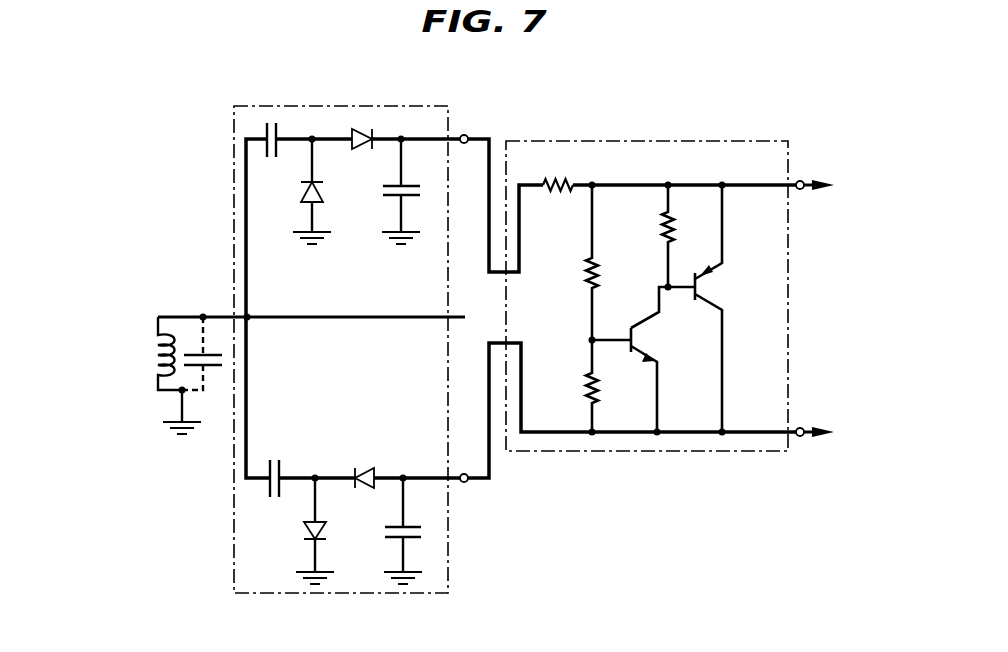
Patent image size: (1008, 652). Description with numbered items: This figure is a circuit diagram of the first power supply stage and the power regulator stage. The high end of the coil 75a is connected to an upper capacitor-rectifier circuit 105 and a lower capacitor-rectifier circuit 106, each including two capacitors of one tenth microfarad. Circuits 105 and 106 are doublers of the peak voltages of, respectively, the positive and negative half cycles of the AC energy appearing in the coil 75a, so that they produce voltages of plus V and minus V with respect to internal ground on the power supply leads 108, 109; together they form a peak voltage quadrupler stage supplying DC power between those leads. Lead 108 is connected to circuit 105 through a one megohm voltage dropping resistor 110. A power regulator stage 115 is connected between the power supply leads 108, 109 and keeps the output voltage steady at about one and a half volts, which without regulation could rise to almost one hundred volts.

The coil 75a is at (147, 362).
The upper capacitor-rectifier circuit 105 is at (374, 285).
The lower capacitor-rectifier circuit 106 is at (374, 392).
The power supply lead 108 is at (481, 134).
The power supply lead 109 is at (480, 482).
The voltage dropping resistor 110 is at (571, 182).
The power regulator stage 115 is at (703, 262).